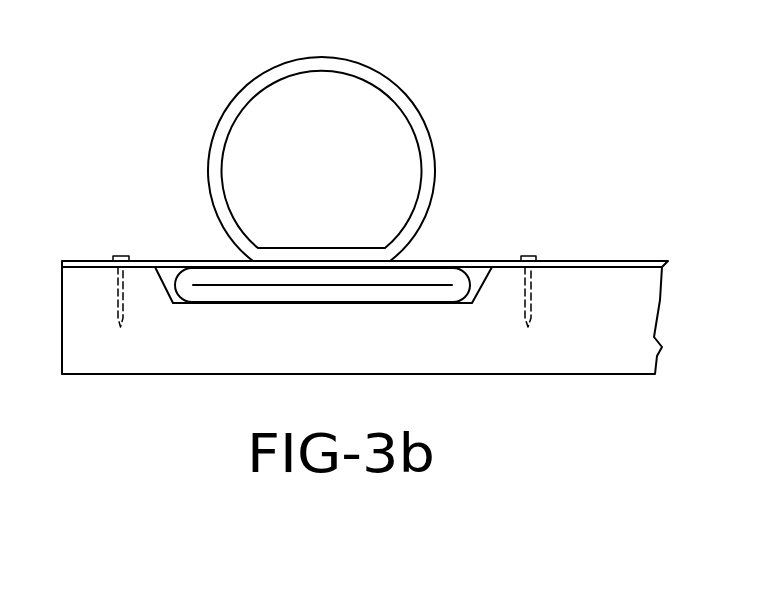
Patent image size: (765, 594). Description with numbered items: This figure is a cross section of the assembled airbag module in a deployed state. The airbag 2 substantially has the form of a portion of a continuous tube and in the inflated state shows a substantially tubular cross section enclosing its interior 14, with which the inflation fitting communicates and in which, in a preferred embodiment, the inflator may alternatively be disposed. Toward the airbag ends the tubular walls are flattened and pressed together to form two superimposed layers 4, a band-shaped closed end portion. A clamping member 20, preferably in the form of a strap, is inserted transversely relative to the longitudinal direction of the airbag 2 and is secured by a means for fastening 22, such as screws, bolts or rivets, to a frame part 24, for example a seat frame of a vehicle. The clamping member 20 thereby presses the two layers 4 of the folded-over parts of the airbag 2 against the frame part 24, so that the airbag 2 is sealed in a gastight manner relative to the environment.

The airbag 2 is at (257, 90).
The interior 14 is at (360, 130).
The layers 4 is at (208, 280).
The clamping member 20 is at (610, 268).
The means for fastening 22 is at (529, 258).
The frame part 24 is at (570, 347).